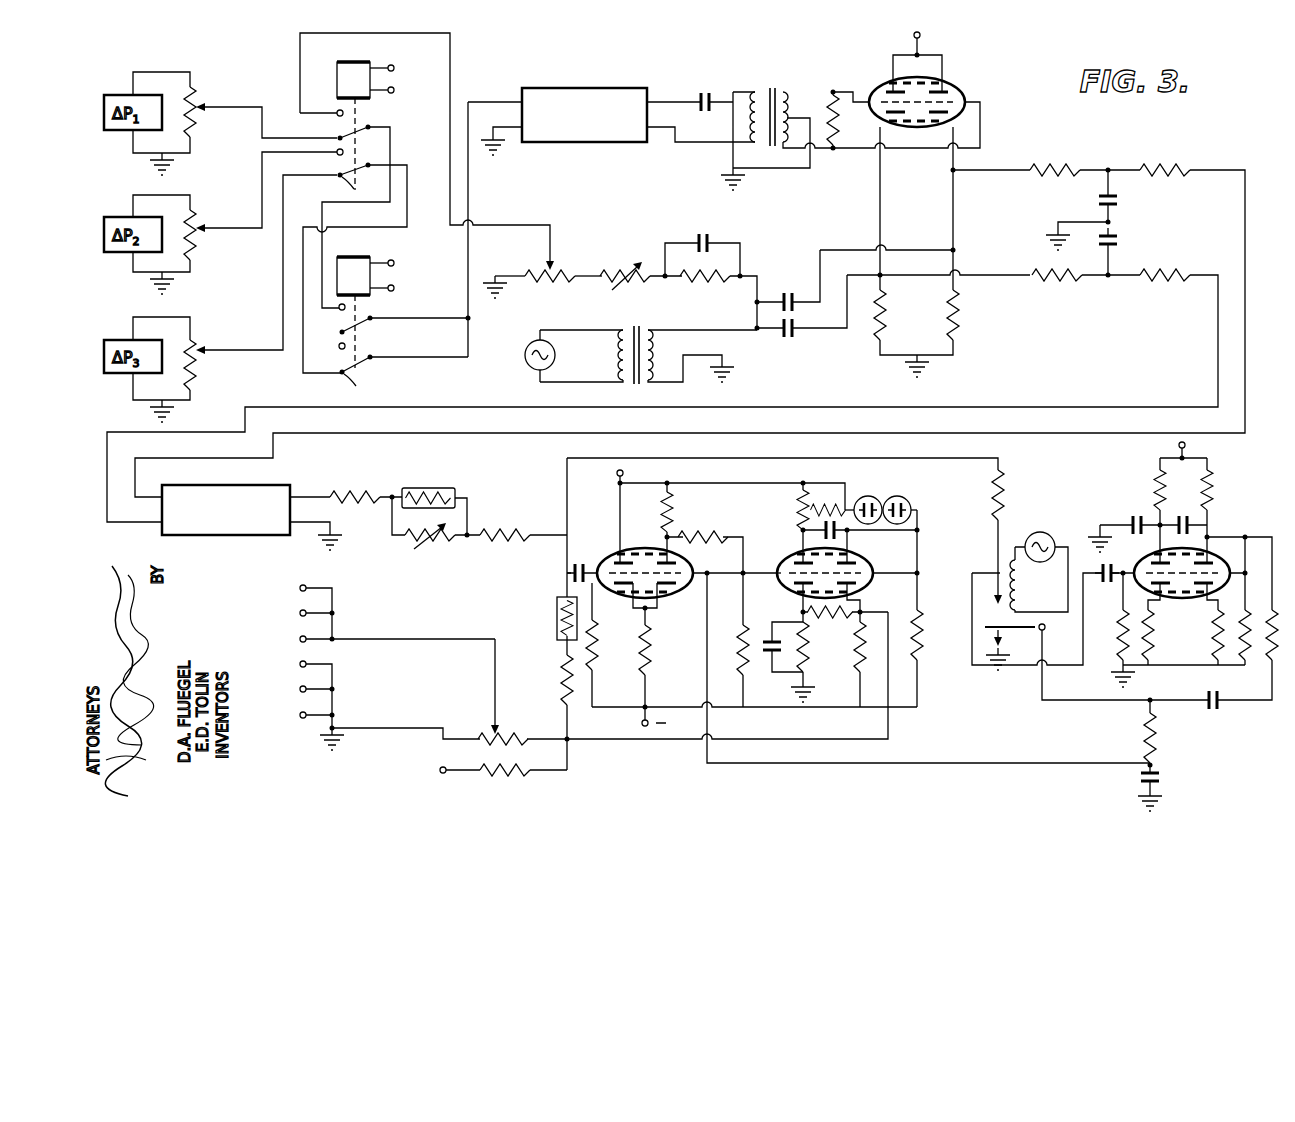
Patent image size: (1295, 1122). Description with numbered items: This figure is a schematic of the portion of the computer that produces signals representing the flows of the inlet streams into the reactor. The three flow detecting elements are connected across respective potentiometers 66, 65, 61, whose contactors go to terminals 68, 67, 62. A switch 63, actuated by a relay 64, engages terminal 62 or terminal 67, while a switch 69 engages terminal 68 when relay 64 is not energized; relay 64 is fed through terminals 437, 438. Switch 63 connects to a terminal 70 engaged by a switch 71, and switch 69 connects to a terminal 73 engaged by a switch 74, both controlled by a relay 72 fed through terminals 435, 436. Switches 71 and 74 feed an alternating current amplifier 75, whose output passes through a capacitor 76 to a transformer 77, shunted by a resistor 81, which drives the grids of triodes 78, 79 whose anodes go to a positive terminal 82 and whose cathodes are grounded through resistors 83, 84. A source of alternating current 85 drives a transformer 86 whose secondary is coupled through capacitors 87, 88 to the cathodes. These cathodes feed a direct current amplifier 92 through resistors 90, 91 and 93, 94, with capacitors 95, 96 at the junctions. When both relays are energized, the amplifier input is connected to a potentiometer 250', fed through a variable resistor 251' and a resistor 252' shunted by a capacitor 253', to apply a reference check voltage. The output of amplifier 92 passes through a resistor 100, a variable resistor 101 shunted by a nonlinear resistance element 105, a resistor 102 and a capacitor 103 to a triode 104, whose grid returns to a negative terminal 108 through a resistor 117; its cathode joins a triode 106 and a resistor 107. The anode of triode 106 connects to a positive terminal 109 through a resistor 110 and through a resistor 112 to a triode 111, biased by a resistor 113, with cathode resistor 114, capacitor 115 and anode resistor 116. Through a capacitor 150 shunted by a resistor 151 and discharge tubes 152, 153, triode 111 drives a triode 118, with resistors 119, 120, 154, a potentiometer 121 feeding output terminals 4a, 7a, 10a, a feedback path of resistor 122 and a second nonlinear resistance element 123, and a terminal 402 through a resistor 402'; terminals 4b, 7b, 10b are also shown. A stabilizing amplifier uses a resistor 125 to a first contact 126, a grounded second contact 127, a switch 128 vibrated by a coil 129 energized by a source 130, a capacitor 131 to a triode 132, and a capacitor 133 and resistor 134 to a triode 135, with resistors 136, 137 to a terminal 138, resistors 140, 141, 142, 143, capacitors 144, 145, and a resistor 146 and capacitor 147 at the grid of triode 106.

The potentiometer 66 is at (200, 94).
The potentiometer 65 is at (200, 216).
The potentiometer 61 is at (200, 337).
The relay 64 is at (350, 72).
The positive potential terminal 438 is at (392, 66).
The terminal 437 is at (392, 92).
The terminal 68 is at (338, 136).
The switch 69 is at (370, 126).
The terminal 67 is at (336, 156).
The switch 63 is at (354, 164).
The terminal 62 is at (362, 188).
The relay 72 is at (365, 264).
The positive potential terminal 436 is at (394, 263).
The terminal 435 is at (392, 289).
The terminal 73 is at (336, 310).
The switch 74 is at (372, 318).
The switch 71 is at (372, 356).
The terminal 70 is at (361, 382).
The alternating current amplifier 75 is at (600, 88).
The capacitor 76 is at (706, 88).
The transformer 77 is at (774, 86).
The triode 78 is at (874, 76).
The triode 79 is at (958, 88).
The resistor 81 is at (840, 140).
The terminal 82 is at (912, 36).
The resistor 90 is at (1072, 166).
The resistor 91 is at (1166, 166).
The capacitor 95 is at (1138, 196).
The capacitor 96 is at (1132, 232).
The resistor 93 is at (1058, 294).
The resistor 94 is at (1186, 294).
The potentiometer 250' is at (572, 259).
The variable resistor 251' is at (638, 286).
The resistor 252' is at (714, 290).
The capacitor 253' is at (701, 238).
The transformer 86 is at (632, 326).
The source of alternating current 85 is at (525, 360).
The capacitor 88 is at (790, 292).
The capacitor 87 is at (788, 340).
The resistor 83 is at (890, 330).
The resistor 84 is at (960, 330).
The direct current amplifier 92 is at (282, 492).
The resistor 100 is at (360, 492).
The nonlinear resistance element 105 is at (444, 488).
The variable resistor 101 is at (440, 544).
The resistor 102 is at (516, 532).
The capacitor 103 is at (557, 577).
The second nonlinear resistance element 123 is at (557, 616).
The resistor 122 is at (550, 680).
The potentiometer 121 is at (502, 732).
The terminal 402 is at (414, 780).
The resistor 402' is at (506, 781).
The output terminal 4a is at (298, 589).
The output terminal 7a is at (298, 614).
The output terminal 10a is at (298, 640).
The terminal 4b is at (298, 665).
The terminal 7b is at (298, 690).
The terminal 10b is at (298, 716).
The terminal 109 is at (616, 475).
The resistor 110 is at (670, 512).
The resistor 112 is at (708, 536).
The triode 104 is at (608, 556).
The triode 106 is at (696, 560).
The resistor 117 is at (596, 636).
The resistor 107 is at (638, 666).
The terminal 108 is at (640, 724).
The resistor 113 is at (742, 638).
The capacitor 115 is at (768, 630).
The resistor 116 is at (798, 504).
The capacitor 150 is at (802, 530).
The triode 111 is at (792, 560).
The triode 118 is at (864, 562).
The resistor 151 is at (836, 500).
The electrical discharge tube 152 is at (878, 496).
The electrical discharge tube 153 is at (908, 504).
The resistor 119 is at (816, 648).
The resistor 114 is at (810, 646).
The resistor 120 is at (848, 670).
The resistor 154 is at (935, 658).
The resistor 125 is at (1008, 494).
The source of alternating current 130 is at (1042, 534).
The coil 129 is at (1020, 638).
The first contact 126 is at (984, 622).
The second contact 127 is at (984, 654).
The switch 128 is at (1044, 636).
The terminal 138 is at (1178, 447).
The resistor 136 is at (1152, 494).
The capacitor 144 is at (1180, 510).
The resistor 137 is at (1218, 500).
The triode 135 is at (1228, 544).
The capacitor 145 is at (1128, 512).
The triode 132 is at (1144, 566).
The capacitor 131 is at (1107, 580).
The resistor 142 is at (1108, 664).
The resistor 143 is at (1216, 619).
The resistor 141 is at (1210, 634).
The resistor 140 is at (1158, 642).
The resistor 134 is at (1254, 660).
The capacitor 133 is at (1216, 712).
The resistor 146 is at (1140, 738).
The capacitor 147 is at (1164, 778).